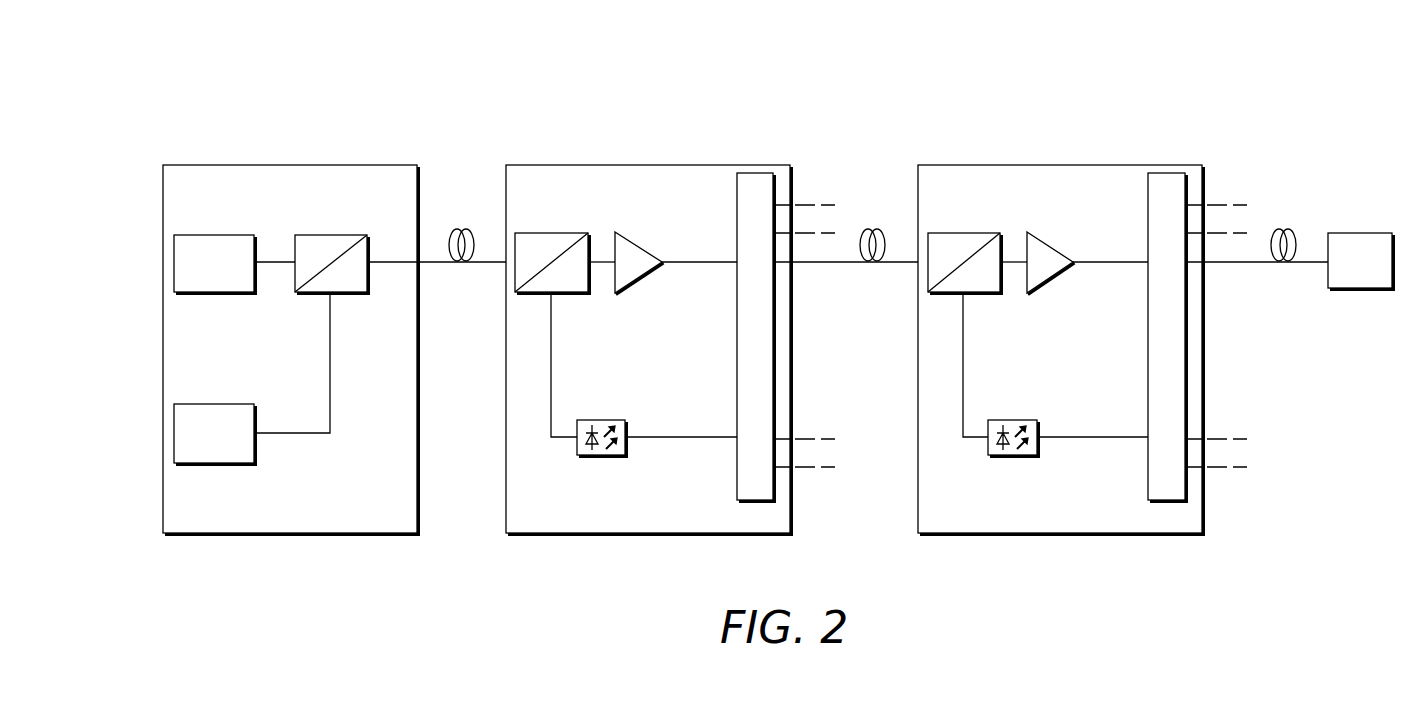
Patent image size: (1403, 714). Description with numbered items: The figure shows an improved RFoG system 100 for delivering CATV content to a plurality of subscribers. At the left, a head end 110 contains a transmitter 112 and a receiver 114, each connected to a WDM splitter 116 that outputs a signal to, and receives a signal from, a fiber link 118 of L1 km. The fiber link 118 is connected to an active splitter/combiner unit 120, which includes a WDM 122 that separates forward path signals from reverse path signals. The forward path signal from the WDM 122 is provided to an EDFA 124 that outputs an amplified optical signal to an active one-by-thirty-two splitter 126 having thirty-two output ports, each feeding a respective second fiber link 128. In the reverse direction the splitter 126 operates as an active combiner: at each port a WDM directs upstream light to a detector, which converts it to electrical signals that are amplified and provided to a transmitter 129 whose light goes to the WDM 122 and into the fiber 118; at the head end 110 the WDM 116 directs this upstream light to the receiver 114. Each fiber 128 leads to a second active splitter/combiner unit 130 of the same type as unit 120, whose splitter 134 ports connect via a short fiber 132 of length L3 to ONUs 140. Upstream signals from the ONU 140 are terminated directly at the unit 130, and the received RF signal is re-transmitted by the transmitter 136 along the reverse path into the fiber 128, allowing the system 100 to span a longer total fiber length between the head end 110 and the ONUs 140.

The system 100 is at (178, 76).
The head end 110 is at (397, 519).
The transmitter 112 is at (223, 294).
The receiver 114 is at (213, 404).
The WDM splitter 116 is at (345, 294).
The fiber link 118 is at (485, 264).
The active splitter/combiner unit 120 is at (667, 165).
The WDM 122 is at (571, 294).
The EDFA 124 is at (646, 282).
The active 1×32 splitter 126 is at (737, 389).
The second fiber link 128 is at (860, 264).
The transmitter 129 is at (600, 420).
The second active splitter/combiner unit 130 is at (1040, 165).
The fiber 132 is at (1247, 264).
The splitter 134 is at (1148, 368).
The transmitter 136 is at (1012, 420).
The ONU 140 is at (1362, 233).